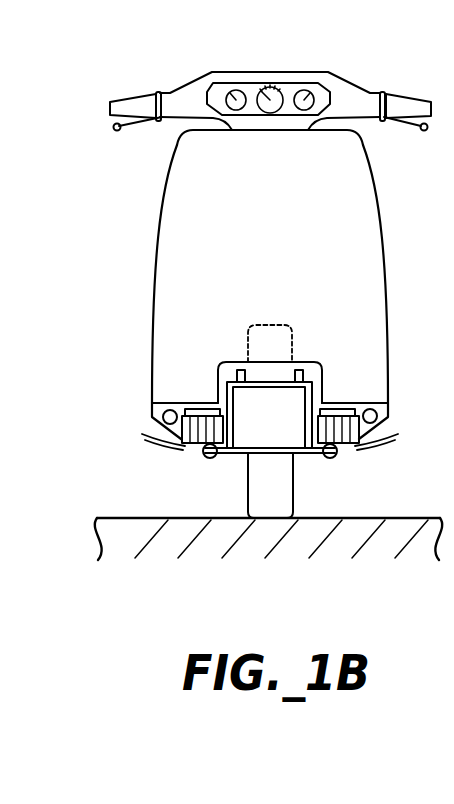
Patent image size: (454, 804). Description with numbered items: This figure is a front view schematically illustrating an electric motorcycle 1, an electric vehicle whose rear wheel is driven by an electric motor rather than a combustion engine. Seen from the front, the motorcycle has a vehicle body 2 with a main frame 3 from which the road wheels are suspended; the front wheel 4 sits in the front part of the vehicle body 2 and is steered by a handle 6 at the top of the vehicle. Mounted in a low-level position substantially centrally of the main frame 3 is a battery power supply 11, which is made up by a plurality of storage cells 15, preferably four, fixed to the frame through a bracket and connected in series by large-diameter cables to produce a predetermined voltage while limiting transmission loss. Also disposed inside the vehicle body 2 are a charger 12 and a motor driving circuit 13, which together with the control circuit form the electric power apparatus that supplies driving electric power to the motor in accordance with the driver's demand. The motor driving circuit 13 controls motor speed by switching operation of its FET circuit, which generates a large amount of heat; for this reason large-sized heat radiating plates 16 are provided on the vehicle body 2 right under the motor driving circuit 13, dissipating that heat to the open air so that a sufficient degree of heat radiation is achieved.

The electric motorcycle 1 is at (304, 59).
The vehicle body 2 is at (172, 217).
The main frame 3 is at (163, 414).
The front wheel 4 is at (294, 333).
The handle 6 is at (405, 105).
The battery power supply 11 is at (270, 432).
The charger 12 is at (203, 408).
The motor driving circuit 13 is at (332, 408).
The storage cells 15 is at (299, 444).
The heat radiating plates 16 is at (182, 442).